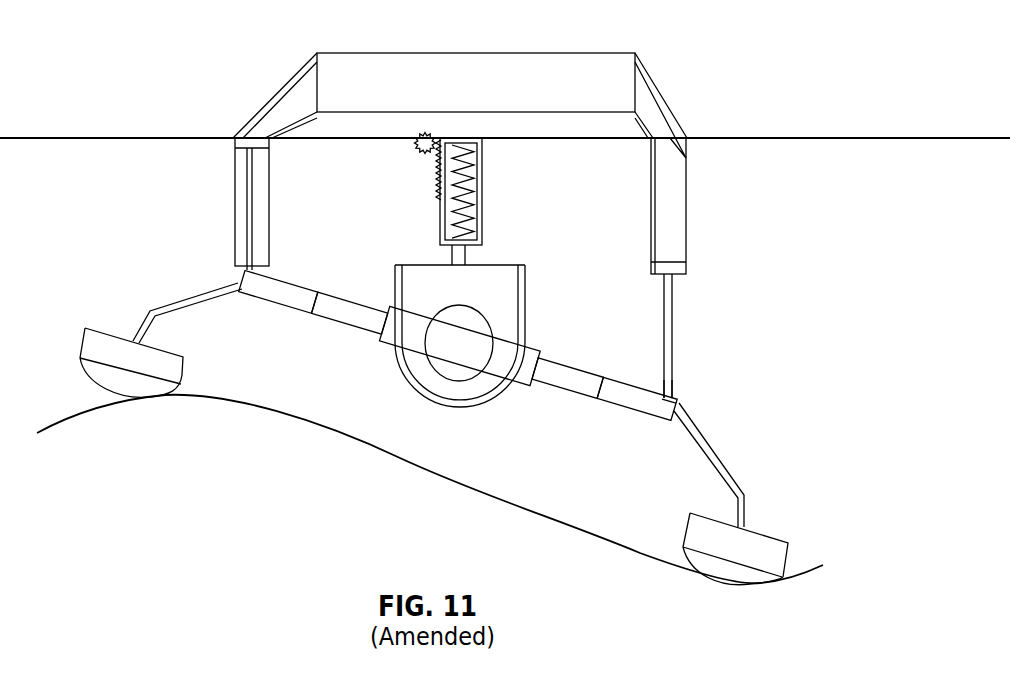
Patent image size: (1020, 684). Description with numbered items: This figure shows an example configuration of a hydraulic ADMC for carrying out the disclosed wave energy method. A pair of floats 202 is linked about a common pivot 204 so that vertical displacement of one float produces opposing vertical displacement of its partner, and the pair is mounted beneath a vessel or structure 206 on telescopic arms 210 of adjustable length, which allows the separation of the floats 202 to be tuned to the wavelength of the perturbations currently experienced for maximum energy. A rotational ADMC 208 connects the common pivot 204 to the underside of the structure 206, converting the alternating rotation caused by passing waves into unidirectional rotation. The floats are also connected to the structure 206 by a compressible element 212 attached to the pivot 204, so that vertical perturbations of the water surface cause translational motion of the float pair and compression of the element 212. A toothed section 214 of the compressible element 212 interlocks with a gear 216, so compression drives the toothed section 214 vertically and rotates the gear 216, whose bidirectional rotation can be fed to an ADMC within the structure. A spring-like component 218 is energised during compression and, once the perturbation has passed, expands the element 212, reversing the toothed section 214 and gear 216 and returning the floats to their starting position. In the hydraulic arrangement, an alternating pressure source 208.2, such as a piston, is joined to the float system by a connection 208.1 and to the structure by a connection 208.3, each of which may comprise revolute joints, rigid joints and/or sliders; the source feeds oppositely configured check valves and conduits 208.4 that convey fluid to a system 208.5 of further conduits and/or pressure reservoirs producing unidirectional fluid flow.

The float 202 is at (155, 393).
The common pivot 204 is at (452, 345).
The vessel or structure 206 is at (505, 120).
The rotational ADMC 208 is at (496, 212).
The connection of the alternating pressure source to the float system 208.1 is at (755, 387).
The alternating pressure source 208.2 is at (760, 259).
The connection of the alternating pressure source to the vessel or structure 208.3 is at (667, 140).
The conduits 208.4 is at (730, 73).
The system 208.5 is at (575, 86).
The telescopic arms 210 is at (565, 362).
The compressible element 212 is at (440, 236).
The toothed section 214 is at (436, 178).
The gear 216 is at (414, 151).
The spring-like component 218 is at (445, 205).